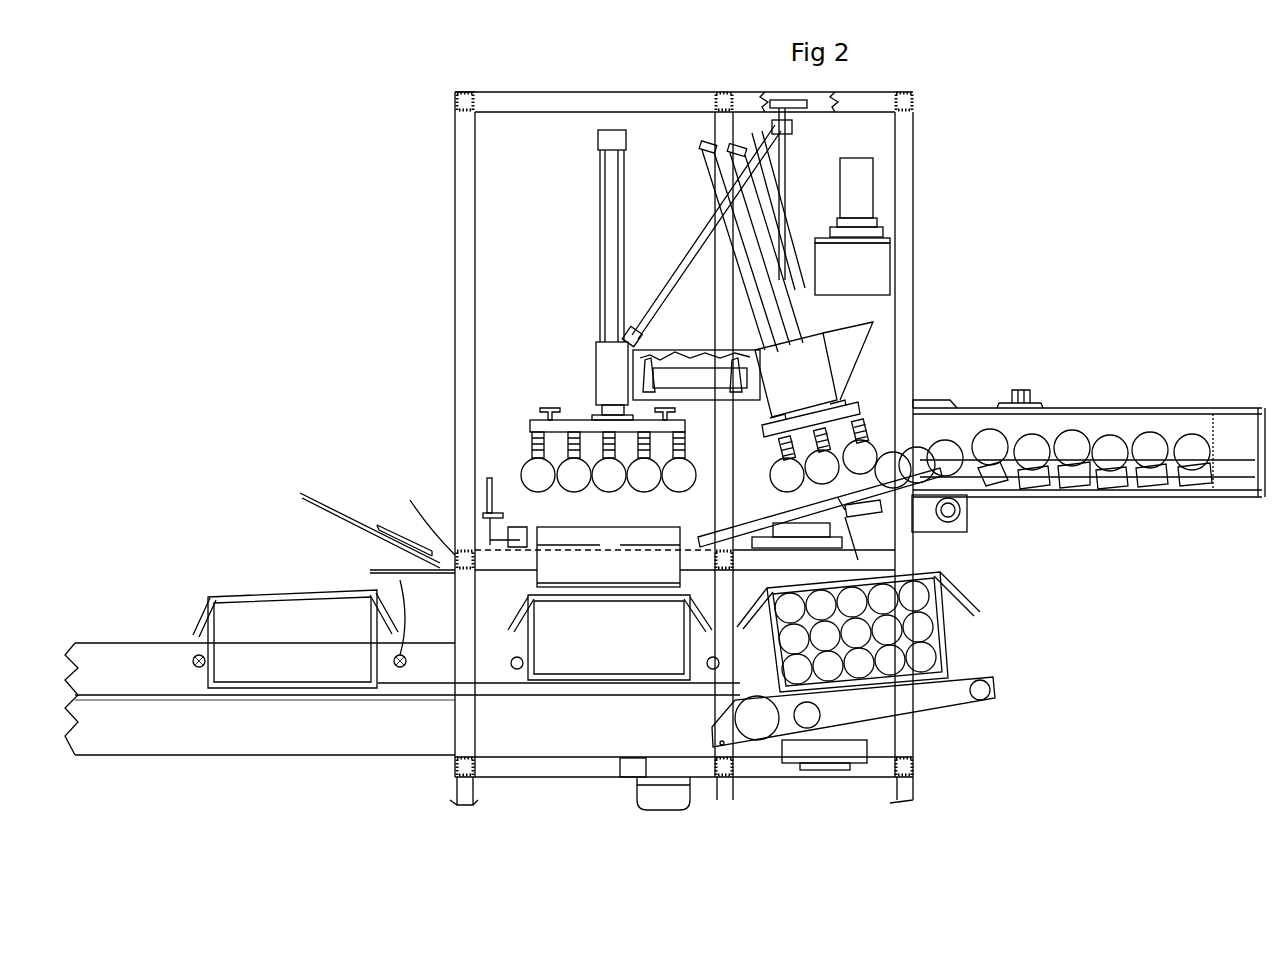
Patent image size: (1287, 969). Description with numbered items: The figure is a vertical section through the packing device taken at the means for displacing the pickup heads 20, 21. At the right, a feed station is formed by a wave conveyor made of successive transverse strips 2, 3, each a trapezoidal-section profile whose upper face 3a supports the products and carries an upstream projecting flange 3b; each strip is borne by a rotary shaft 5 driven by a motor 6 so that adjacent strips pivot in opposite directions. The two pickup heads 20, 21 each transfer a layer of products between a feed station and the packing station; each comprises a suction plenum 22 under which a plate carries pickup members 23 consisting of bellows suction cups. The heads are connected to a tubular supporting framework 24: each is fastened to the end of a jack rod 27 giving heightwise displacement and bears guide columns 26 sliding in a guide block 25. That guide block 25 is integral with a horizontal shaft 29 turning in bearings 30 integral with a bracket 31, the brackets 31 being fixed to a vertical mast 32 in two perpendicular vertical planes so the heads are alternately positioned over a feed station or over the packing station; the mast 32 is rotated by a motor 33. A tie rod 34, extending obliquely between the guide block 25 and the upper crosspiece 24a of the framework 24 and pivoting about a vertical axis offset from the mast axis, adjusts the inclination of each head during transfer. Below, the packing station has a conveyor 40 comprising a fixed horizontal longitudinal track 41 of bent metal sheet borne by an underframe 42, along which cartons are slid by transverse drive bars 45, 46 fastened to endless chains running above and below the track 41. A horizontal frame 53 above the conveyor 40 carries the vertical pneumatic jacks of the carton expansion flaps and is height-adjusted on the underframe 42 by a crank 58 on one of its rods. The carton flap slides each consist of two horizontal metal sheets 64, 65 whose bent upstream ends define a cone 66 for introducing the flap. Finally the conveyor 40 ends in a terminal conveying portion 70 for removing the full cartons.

The transverse strip 2 is at (1034, 480).
The transverse strip 3 is at (1074, 480).
The upper face 3a is at (1102, 480).
The flange 3b is at (1190, 440).
The rotary shaft 5 is at (1000, 480).
The motor 6 is at (958, 530).
The pickup head 20 is at (520, 406).
The pickup head 21 is at (875, 408).
The suction plenum 22 is at (573, 413).
The pickup member 23 is at (522, 446).
The tubular supporting framework 24 is at (567, 90).
The upper crosspiece 24a is at (612, 100).
The guide block 25 is at (600, 350).
The guide column 26 is at (712, 160).
The jack rod 27 is at (750, 175).
The horizontal shaft 29 is at (690, 372).
The bearing 30 is at (735, 372).
The bracket 31 is at (700, 418).
The vertical mast 32 is at (792, 500).
The motor 33 is at (860, 190).
The tie rod 34 is at (690, 230).
The conveyor 40 is at (316, 775).
The longitudinal track 41 is at (118, 700).
The underframe 42 is at (425, 735).
The transverse drive bar 45 is at (199, 668).
The transverse drive bar 46 is at (380, 560).
The horizontal frame 53 is at (430, 555).
The crank 58 is at (410, 500).
The metal sheet 64 is at (432, 548).
The metal sheet 65 is at (362, 538).
The cone 66 is at (395, 558).
The terminal conveying portion 70 is at (945, 710).